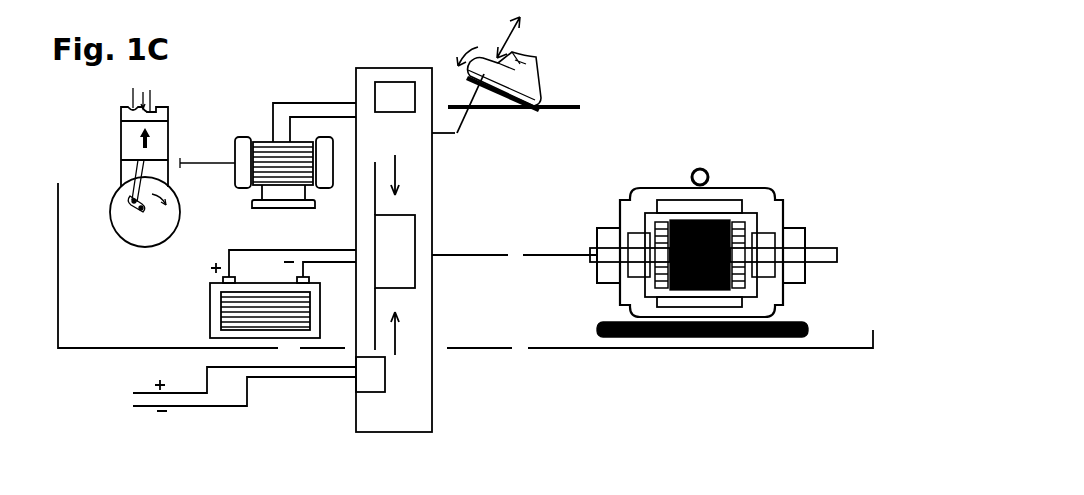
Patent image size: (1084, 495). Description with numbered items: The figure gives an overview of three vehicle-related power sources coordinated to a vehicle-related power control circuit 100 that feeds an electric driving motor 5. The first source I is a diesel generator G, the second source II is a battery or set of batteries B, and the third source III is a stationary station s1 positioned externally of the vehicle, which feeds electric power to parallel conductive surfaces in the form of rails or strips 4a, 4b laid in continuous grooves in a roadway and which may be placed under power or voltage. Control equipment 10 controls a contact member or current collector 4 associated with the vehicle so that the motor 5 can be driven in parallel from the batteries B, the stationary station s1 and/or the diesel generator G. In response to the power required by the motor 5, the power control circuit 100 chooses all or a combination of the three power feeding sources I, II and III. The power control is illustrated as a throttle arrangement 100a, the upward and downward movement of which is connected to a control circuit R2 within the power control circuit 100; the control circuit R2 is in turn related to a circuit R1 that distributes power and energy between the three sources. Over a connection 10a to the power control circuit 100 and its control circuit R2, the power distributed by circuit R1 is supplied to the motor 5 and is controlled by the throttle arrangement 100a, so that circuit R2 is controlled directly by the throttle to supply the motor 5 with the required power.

The first power source I is at (172, 166).
The second power source II is at (201, 265).
The third power source III is at (209, 389).
The stationary station s1 is at (154, 416).
The diesel generator G is at (262, 201).
The battery B is at (210, 322).
The circuit distributing power R1 is at (400, 268).
The control circuit R2 is at (380, 92).
The control equipment 10 is at (373, 373).
The connection 10a is at (456, 135).
The power control circuit 100 is at (425, 420).
The throttle arrangement 100a is at (484, 40).
The electric driving motor 5 is at (728, 188).
The rail or strip 4a is at (157, 374).
The current collector 4 is at (190, 381).
The rail or strip 4b is at (190, 381).